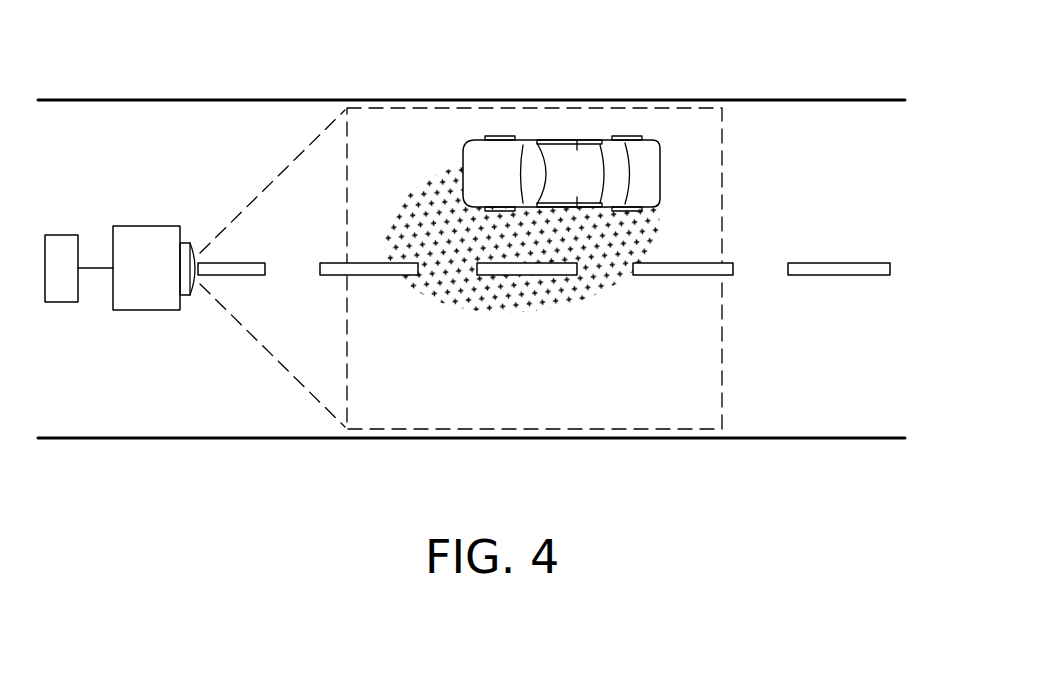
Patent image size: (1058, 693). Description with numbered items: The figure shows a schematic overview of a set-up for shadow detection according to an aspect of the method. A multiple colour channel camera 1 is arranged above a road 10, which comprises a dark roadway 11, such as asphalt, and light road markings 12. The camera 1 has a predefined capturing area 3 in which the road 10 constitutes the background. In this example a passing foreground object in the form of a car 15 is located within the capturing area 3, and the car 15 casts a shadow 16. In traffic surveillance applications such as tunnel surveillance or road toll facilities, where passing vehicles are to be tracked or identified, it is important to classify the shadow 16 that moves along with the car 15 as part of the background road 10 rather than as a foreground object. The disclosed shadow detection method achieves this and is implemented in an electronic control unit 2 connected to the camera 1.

The multiple colour channel camera 1 is at (148, 290).
The electronic control unit 2 is at (62, 290).
The capturing area 3 is at (722, 372).
The road 10 is at (797, 100).
The roadway 11 is at (167, 145).
The road markings 12 is at (244, 276).
The car 15 is at (570, 168).
The shadow 16 is at (415, 190).